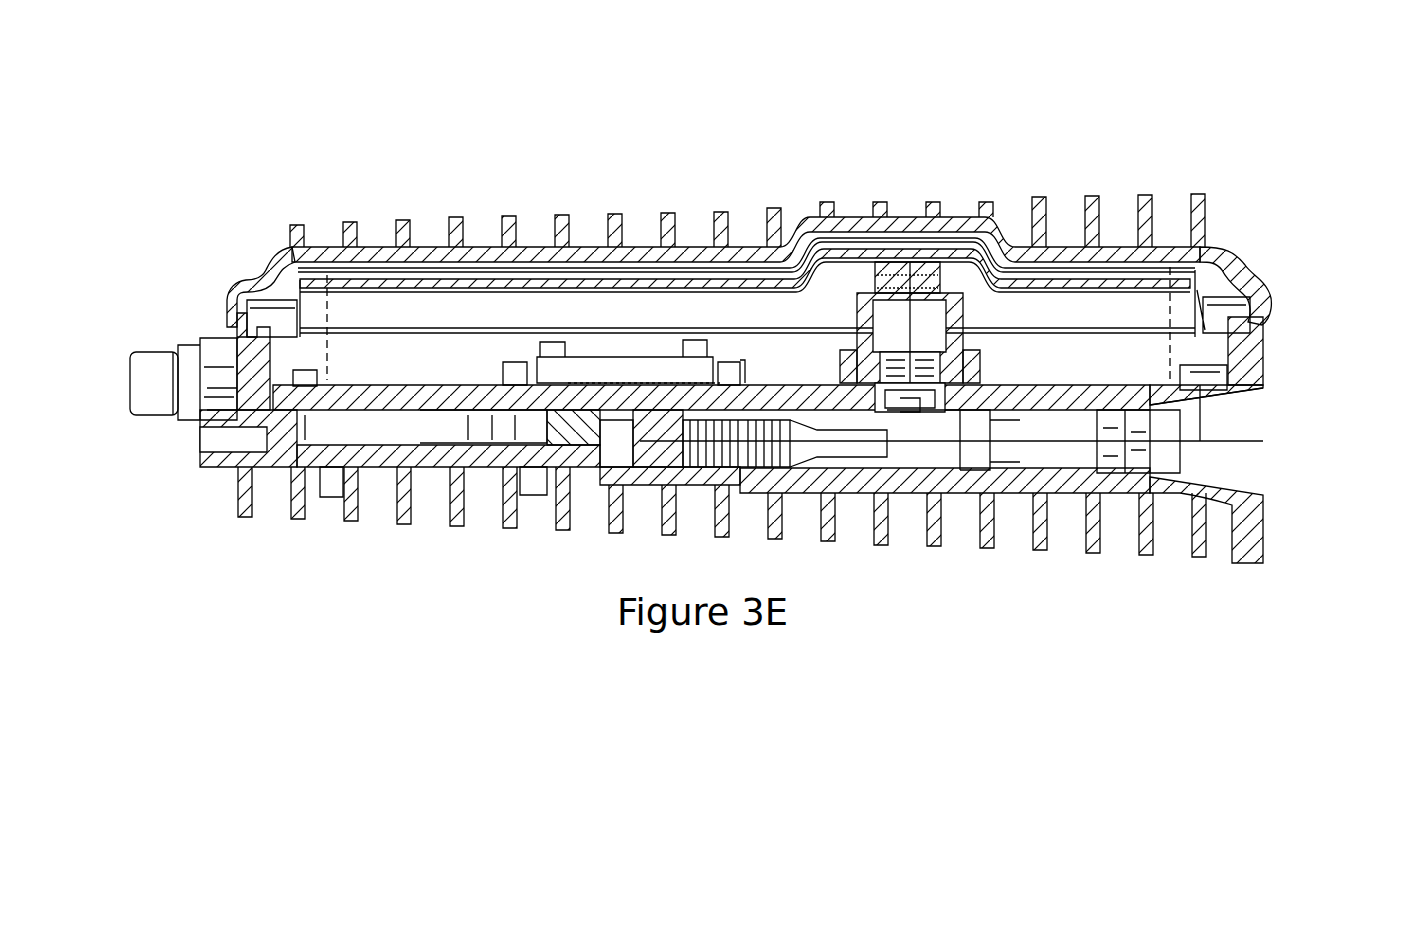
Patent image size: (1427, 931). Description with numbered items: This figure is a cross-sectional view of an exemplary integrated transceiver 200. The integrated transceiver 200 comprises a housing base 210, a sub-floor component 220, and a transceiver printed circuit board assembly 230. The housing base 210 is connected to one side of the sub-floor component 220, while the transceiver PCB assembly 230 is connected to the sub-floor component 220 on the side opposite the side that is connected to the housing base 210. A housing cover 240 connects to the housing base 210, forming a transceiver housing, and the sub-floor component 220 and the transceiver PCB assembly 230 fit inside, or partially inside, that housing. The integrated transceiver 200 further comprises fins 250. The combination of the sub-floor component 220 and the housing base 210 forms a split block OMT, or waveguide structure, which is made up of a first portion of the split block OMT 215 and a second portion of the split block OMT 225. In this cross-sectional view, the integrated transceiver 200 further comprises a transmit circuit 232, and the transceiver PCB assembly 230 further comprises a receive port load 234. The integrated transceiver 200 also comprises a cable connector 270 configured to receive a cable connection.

The integrated transceiver 200 is at (860, 86).
The housing base 210 is at (593, 477).
The first portion of the split block OMT 215 is at (1235, 466).
The sub-floor component 220 is at (573, 412).
The second portion of the split block OMT 225 is at (1243, 415).
The transceiver printed circuit board assembly 230 is at (445, 380).
The transmit circuit 232 is at (595, 355).
The receive port load 234 is at (965, 305).
The housing cover 240 is at (280, 250).
The fins 250 is at (238, 518).
The cable connector 270 is at (127, 395).